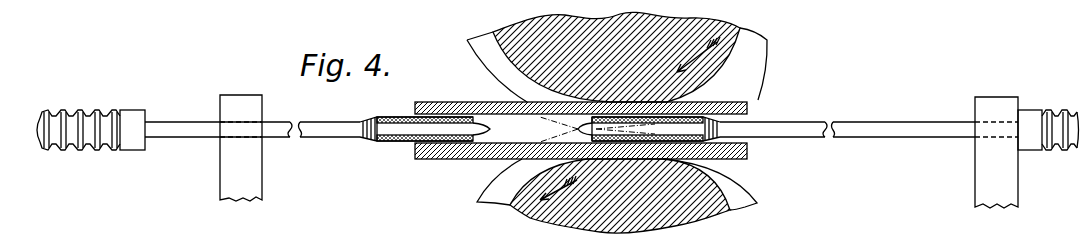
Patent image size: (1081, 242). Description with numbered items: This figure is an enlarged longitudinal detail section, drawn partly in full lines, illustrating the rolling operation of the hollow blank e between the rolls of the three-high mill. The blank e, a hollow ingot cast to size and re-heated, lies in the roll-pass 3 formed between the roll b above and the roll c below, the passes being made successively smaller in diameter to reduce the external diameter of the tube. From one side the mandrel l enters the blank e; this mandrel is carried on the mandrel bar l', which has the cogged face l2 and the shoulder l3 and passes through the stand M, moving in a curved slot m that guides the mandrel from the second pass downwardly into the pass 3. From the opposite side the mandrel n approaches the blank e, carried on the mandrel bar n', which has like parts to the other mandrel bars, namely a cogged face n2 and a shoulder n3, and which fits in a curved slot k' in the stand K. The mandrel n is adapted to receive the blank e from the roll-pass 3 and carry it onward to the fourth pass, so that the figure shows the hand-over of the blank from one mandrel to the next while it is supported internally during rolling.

The threaded end of rod n n2 is at (61, 148).
The collar on rod n n3 is at (133, 118).
The mandrel bar n' is at (252, 131).
The stand K is at (235, 100).
The curved slot k' is at (241, 153).
The mandrel n is at (425, 149).
The blank e is at (470, 102).
The roll-pass 3 is at (617, 119).
The roll b is at (616, 57).
The roll c is at (620, 196).
The mandrel l is at (624, 129).
The mandrel bar l' is at (847, 132).
The curved slot m is at (977, 130).
The stand M is at (996, 139).
The shoulder l3 is at (1030, 117).
The cogged face l2 is at (1050, 150).